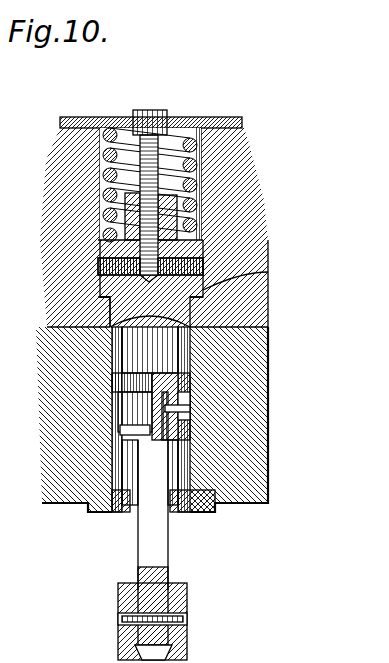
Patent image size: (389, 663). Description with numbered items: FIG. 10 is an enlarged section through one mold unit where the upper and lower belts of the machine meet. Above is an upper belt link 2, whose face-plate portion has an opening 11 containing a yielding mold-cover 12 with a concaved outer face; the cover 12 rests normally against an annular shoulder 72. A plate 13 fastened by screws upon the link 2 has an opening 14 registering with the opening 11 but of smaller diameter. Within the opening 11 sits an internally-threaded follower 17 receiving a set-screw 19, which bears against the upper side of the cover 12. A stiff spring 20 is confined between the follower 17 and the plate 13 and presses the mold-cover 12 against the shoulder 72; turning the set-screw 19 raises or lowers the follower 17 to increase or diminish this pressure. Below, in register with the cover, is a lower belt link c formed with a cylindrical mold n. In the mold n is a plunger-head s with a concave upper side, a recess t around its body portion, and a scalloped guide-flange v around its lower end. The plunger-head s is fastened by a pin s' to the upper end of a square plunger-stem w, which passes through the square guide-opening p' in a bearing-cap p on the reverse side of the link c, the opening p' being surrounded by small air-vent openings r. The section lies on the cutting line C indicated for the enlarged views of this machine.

The upper belt link 2 is at (68, 200).
The opening 11 is at (110, 310).
The yielding mold-cover 12 is at (150, 283).
The plate 13 is at (114, 118).
The opening in plate 14 is at (175, 121).
The internally-threaded follower 17 is at (96, 248).
The set-screw 19 is at (161, 110).
The spring 20 is at (110, 133).
The annular shoulder 72 is at (283, 265).
The mold n is at (176, 352).
The plunger-head s is at (109, 405).
The pin s' is at (207, 416).
The recess t is at (127, 403).
The scalloped guide-flange v is at (120, 428).
The section line C is at (243, 419).
The lower belt link c is at (58, 455).
The square opening p' is at (163, 476).
The bearing-cap p is at (219, 533).
The air-vent opening r is at (182, 522).
The plunger-stem w is at (148, 552).